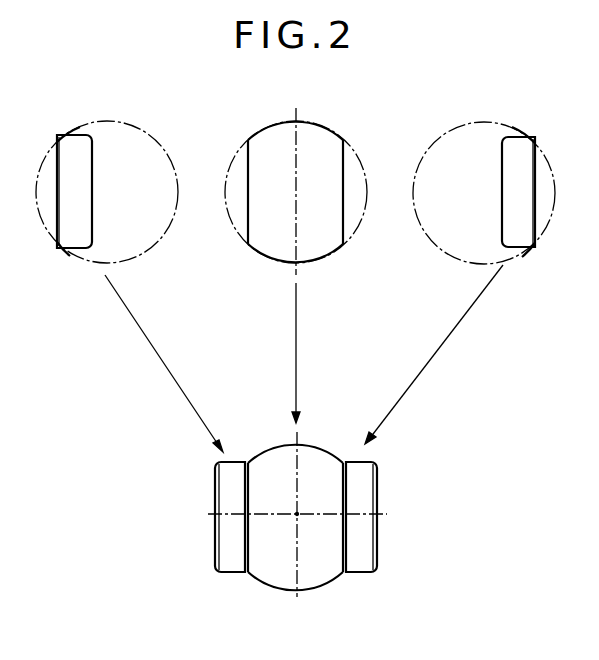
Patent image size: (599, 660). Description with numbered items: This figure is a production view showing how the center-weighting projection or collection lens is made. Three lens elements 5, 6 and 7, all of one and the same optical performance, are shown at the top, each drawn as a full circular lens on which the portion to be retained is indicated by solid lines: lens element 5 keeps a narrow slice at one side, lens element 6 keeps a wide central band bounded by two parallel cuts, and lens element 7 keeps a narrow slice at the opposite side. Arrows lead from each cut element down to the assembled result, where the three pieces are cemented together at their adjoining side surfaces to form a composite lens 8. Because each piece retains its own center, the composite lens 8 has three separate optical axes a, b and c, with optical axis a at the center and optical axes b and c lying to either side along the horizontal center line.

The lens element 5 is at (72, 140).
The lens element 6 is at (316, 127).
The lens element 7 is at (519, 140).
The composite lens 8 is at (314, 574).
The optical axis a is at (297, 513).
The optical axis b is at (270, 514).
The optical axis c is at (323, 514).